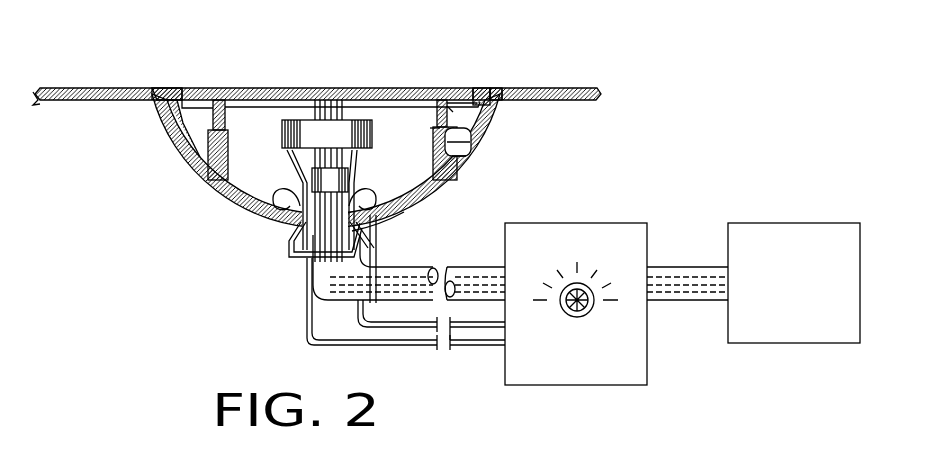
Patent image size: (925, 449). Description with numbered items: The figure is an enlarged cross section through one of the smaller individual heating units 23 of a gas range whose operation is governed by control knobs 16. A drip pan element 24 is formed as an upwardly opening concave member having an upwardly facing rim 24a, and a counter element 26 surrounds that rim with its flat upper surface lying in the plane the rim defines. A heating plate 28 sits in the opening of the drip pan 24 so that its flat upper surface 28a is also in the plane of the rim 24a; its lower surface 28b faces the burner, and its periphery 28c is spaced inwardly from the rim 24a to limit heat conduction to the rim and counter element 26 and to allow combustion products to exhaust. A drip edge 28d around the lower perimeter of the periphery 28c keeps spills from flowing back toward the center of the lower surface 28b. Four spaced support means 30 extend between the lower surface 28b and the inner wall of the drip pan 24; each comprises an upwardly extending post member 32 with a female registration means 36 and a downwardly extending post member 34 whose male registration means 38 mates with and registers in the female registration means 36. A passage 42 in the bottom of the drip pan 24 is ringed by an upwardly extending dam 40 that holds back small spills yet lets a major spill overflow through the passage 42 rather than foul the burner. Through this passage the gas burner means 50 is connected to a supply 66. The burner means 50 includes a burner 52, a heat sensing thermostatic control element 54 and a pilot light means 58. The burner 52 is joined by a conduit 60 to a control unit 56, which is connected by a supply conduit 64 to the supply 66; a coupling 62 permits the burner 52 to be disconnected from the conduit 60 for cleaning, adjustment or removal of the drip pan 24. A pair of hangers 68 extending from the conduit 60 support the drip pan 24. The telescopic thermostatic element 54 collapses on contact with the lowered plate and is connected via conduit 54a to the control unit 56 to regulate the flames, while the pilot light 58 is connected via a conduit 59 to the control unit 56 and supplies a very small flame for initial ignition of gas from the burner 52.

The control knobs 16 is at (590, 312).
The individual heating unit 23 is at (325, 131).
The drip pan element 24 is at (190, 168).
The upwardly facing rim 24a is at (499, 90).
The counter element 26 is at (97, 89).
The heating plate 28 is at (360, 94).
The upper surface 28a is at (408, 93).
The lower surface 28b is at (252, 100).
The periphery 28c is at (170, 96).
The drip edge 28d is at (473, 102).
The support means 30 is at (446, 127).
The post member 32 is at (457, 155).
The post member 34 is at (448, 109).
The female registration means 36 is at (452, 147).
The male registration means 38 is at (455, 122).
The dam 40 is at (280, 220).
The passage 42 is at (354, 223).
The gas burner means 50 is at (325, 144).
The burner 52 is at (283, 133).
The thermostatic control element 54 is at (317, 114).
The conduit 54a is at (477, 327).
The control unit 56 is at (596, 282).
The pilot light means 58 is at (297, 153).
The conduit 59 is at (400, 344).
The conduit 60 is at (328, 298).
The coupling 62 is at (408, 203).
The supply conduit 64 is at (673, 265).
The supply 66 is at (783, 223).
The hangers 68 is at (280, 265).